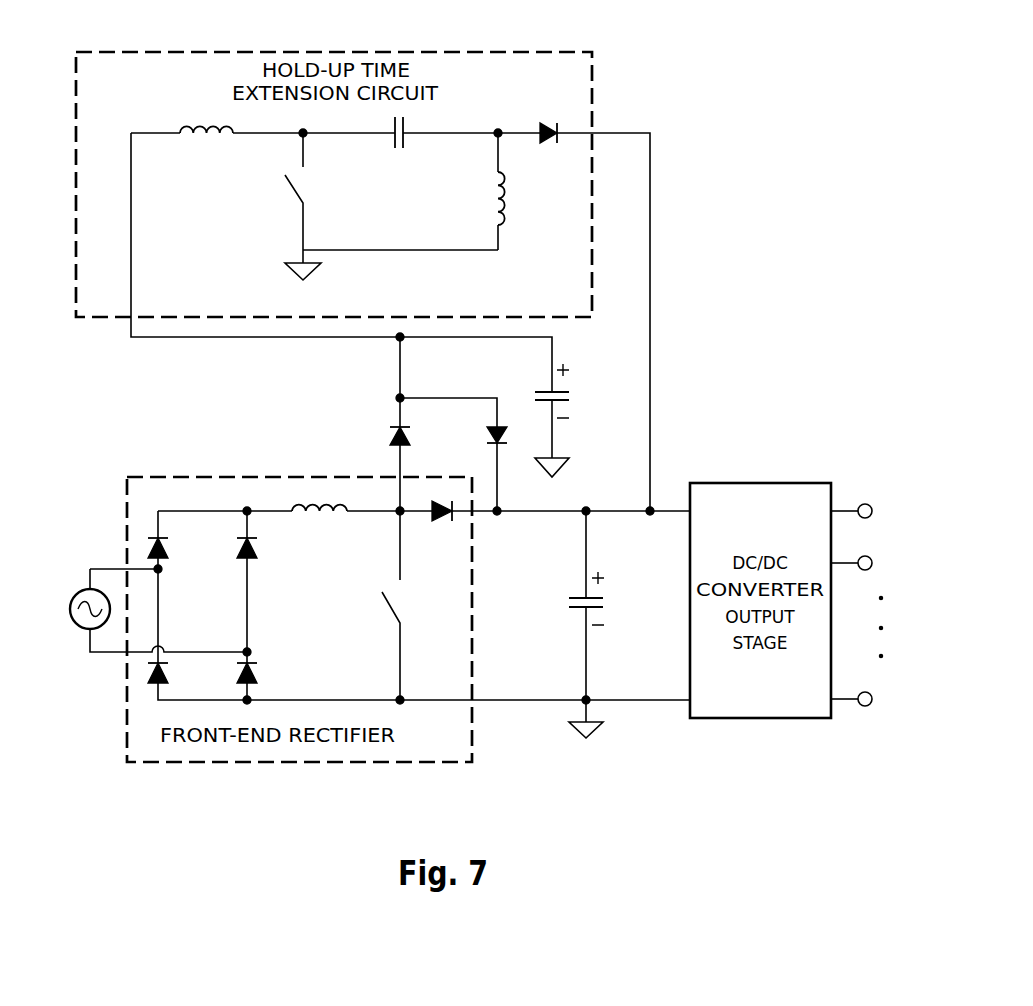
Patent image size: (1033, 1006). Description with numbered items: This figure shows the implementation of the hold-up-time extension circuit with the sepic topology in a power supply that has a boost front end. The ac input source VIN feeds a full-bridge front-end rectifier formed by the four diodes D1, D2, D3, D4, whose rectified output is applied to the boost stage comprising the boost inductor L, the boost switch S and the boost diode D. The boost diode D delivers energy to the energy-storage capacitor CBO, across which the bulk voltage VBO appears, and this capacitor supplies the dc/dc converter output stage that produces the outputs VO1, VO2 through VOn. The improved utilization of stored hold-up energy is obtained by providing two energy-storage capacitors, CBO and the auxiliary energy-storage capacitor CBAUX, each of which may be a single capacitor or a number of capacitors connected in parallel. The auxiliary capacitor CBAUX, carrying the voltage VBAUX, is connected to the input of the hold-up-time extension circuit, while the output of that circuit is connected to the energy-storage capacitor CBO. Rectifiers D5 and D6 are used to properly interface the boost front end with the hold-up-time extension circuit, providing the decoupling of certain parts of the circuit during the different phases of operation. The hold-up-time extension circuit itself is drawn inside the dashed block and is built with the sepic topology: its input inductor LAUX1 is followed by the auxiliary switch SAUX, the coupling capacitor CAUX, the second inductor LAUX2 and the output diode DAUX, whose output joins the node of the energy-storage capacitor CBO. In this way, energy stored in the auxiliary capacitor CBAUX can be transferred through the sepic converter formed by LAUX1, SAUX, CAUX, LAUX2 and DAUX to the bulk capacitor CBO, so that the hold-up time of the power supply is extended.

The first auxiliary inductor LAUX1 is at (206, 149).
The auxiliary switch SAUX is at (280, 206).
The auxiliary capacitor CAUX is at (392, 146).
The second auxiliary inductor LAUX2 is at (466, 191).
The auxiliary diode DAUX is at (552, 151).
The auxiliary energy-storage capacitor CBAUX is at (521, 418).
The auxiliary bulk capacitor voltage VBAUX is at (591, 391).
The rectifier D5 is at (381, 441).
The rectifier D6 is at (478, 441).
The AC input voltage source VIN is at (75, 609).
The rectifier diode D1 is at (174, 553).
The rectifier diode D2 is at (174, 678).
The rectifier diode D3 is at (264, 553).
The rectifier diode D4 is at (264, 678).
The boost inductor L is at (319, 526).
The boost switch S is at (377, 605).
The boost diode D is at (442, 529).
The energy-storage capacitor CBO is at (564, 624).
The bulk output voltage VBO is at (620, 598).
The first output voltage VO1 is at (871, 512).
The second output voltage VO2 is at (871, 564).
The nth output voltage VOn is at (871, 700).